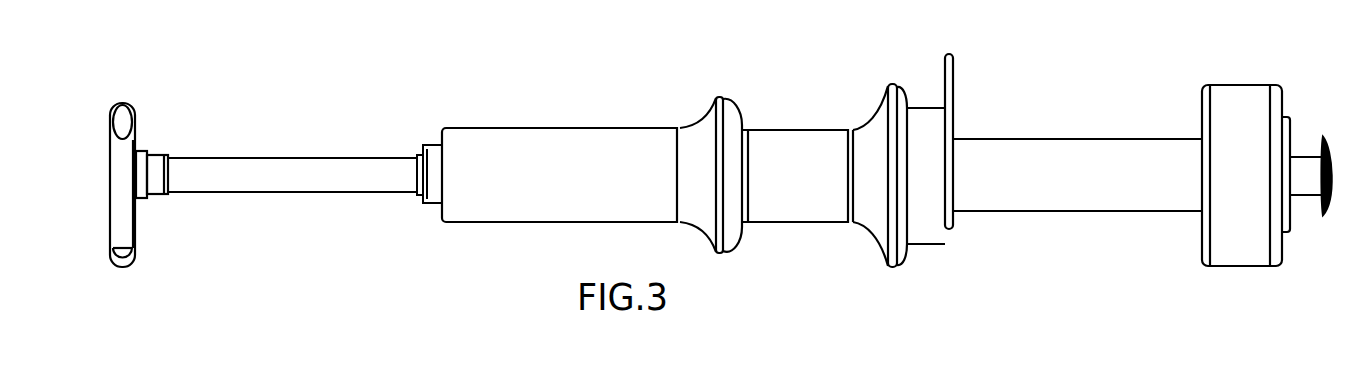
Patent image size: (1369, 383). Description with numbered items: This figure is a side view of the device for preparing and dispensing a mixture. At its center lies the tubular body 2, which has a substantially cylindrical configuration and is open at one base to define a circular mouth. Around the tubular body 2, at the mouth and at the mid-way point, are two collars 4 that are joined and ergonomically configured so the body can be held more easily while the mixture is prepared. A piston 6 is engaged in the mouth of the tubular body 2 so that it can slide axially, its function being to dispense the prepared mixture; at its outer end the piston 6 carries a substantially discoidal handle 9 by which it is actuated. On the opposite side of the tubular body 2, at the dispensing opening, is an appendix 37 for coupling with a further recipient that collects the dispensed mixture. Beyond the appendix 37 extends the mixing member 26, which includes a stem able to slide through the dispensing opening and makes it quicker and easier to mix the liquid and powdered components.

The mixing member 26 is at (245, 134).
The appendix 37 is at (432, 196).
The tubular body 2 is at (545, 124).
The collars 4 is at (728, 240).
The piston 6 is at (1095, 151).
The handle 9 is at (1230, 100).